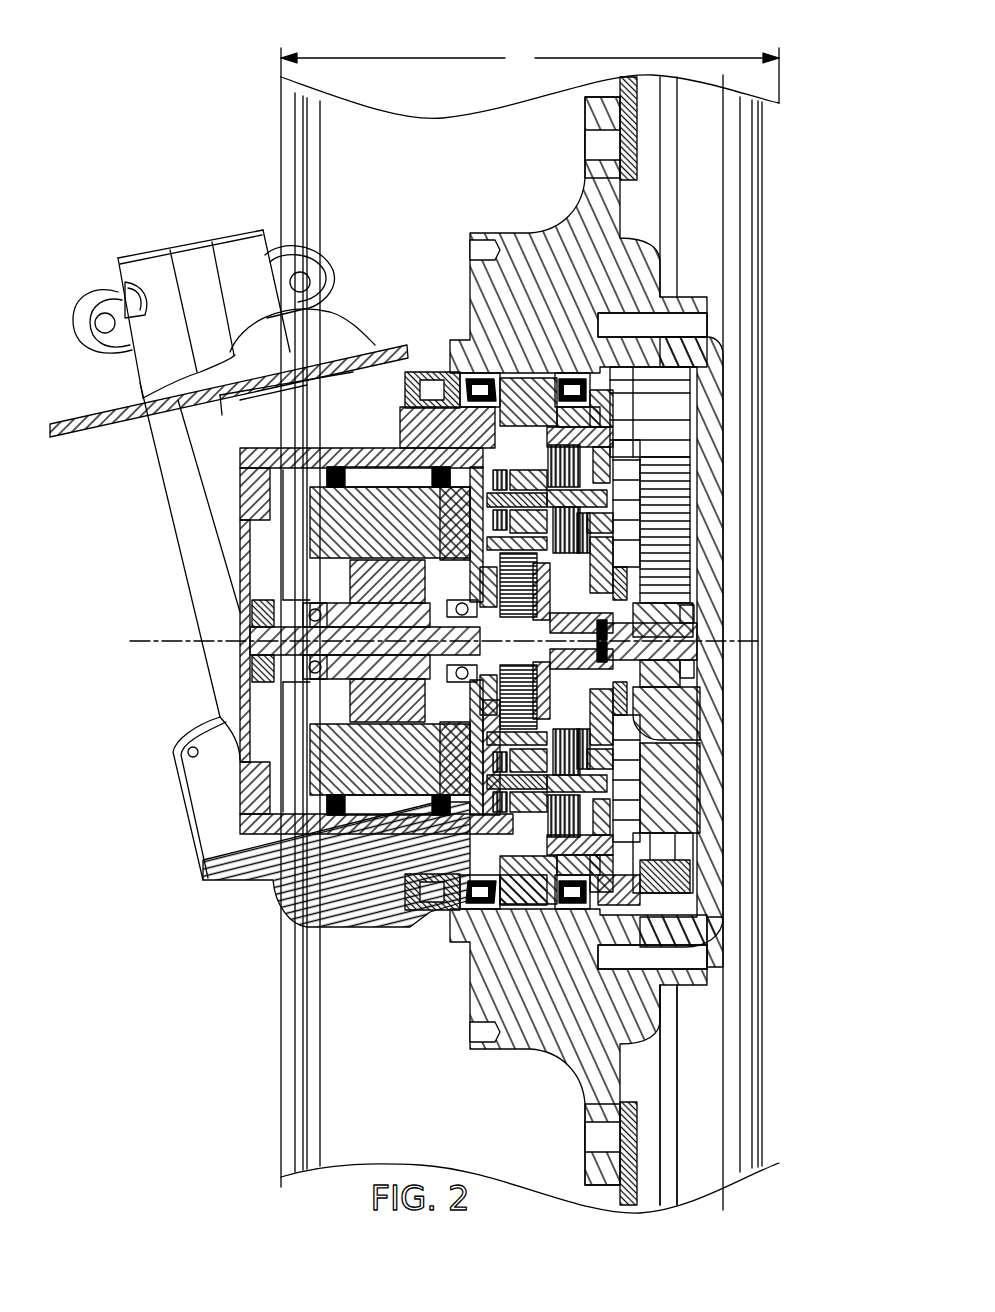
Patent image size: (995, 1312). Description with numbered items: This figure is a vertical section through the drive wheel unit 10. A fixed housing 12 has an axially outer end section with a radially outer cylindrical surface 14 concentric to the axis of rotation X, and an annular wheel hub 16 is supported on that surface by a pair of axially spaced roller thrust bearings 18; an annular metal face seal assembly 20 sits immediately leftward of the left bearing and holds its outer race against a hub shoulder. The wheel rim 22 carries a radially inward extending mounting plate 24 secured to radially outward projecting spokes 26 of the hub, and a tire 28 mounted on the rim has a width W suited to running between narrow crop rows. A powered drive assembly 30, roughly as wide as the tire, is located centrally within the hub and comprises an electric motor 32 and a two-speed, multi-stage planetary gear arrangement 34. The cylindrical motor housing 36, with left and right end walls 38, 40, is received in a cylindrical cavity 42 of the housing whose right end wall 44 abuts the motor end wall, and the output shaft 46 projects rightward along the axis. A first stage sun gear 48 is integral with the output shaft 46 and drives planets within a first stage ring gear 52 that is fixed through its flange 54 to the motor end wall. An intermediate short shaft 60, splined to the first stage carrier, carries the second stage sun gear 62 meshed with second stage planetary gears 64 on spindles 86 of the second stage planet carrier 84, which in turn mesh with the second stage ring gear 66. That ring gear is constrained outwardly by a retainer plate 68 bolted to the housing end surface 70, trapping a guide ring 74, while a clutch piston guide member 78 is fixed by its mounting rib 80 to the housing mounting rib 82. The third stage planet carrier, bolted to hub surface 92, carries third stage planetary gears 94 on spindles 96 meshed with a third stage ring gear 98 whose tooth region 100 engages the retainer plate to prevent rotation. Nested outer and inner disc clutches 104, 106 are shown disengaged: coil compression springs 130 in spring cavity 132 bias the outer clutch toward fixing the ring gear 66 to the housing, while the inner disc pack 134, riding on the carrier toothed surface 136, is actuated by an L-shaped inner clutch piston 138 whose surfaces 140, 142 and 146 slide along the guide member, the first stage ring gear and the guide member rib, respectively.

The drive wheel unit 10 is at (158, 968).
The fixed housing 12 is at (166, 553).
The radially outer cylindrical surface 14 is at (528, 376).
The wheel hub 16 is at (470, 268).
The roller thrust bearings 18 is at (480, 372).
The face seal assembly 20 is at (447, 370).
The wheel rim 22 is at (393, 178).
The mounting plate 24 is at (640, 113).
The spokes 26 is at (585, 118).
The tire 28 is at (281, 935).
The powered drive assembly 30 is at (667, 997).
The electric motor 32 is at (417, 448).
The planetary gear arrangement 34 is at (730, 508).
The motor housing 36 is at (373, 840).
The left end wall 38 is at (240, 820).
The right end wall 40 is at (520, 376).
The cylindrical cavity 42 is at (368, 472).
The right end wall of cavity 44 is at (372, 478).
The motor output shaft 46 is at (410, 631).
The first stage sun gear 48 is at (515, 641).
The first stage ring gear 52 is at (418, 680).
The annular vertical flange 54 is at (428, 713).
The intermediate short shaft 60 is at (693, 652).
The second stage sun gear 62 is at (705, 640).
The second stage planetary gears 64 is at (697, 615).
The second stage ring gear 66 is at (640, 777).
The retainer plate 68 is at (583, 920).
The outermost end surface 70 is at (595, 882).
The guide ring 74 is at (660, 480).
The clutch piston guide member 78 is at (545, 825).
The mounting rib 80 is at (478, 515).
The housing mounting rib 82 is at (430, 742).
The second stage planet carrier 84 is at (697, 678).
The spindles 86 is at (693, 587).
The axially outward facing annular surface 92 is at (717, 923).
The third stage planetary gears 94 is at (692, 880).
The spindles 96 is at (720, 823).
The third stage ring gear 98 is at (655, 413).
The axially inner region of teeth 100 is at (668, 397).
The outer disc clutch 104 is at (598, 838).
The inner disc clutch 106 is at (572, 870).
The coil compression springs 130 is at (470, 478).
The spring cavity 132 is at (470, 797).
The inner disc pack 134 is at (628, 548).
The toothed outer annular surface 136 is at (622, 775).
The inner clutch piston 138 is at (440, 560).
The cylindrical outer surface 140 is at (565, 456).
The cylindrical inner surface 142 is at (483, 540).
The outer cylindrical surface of short leg 146 is at (470, 502).
The tire width W is at (530, 74).
The axis of rotation X is at (140, 641).